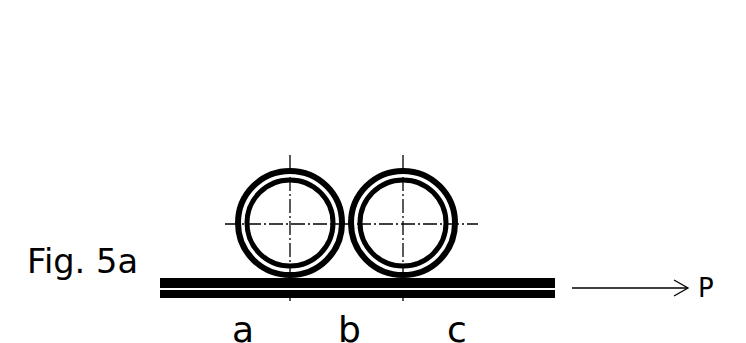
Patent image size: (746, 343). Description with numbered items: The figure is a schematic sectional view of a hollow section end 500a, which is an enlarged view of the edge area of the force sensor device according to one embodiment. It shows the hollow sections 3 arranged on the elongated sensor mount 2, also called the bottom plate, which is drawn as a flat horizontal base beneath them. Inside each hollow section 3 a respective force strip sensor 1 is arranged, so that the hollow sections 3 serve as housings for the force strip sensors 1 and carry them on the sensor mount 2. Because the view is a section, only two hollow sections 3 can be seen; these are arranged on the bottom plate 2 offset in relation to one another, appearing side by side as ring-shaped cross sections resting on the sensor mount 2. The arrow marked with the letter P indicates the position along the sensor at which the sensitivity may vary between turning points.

The hollow section end 500a is at (203, 158).
The force strip sensor 1 is at (420, 208).
The sensor mount 2 is at (493, 278).
The hollow section 3 is at (317, 173).